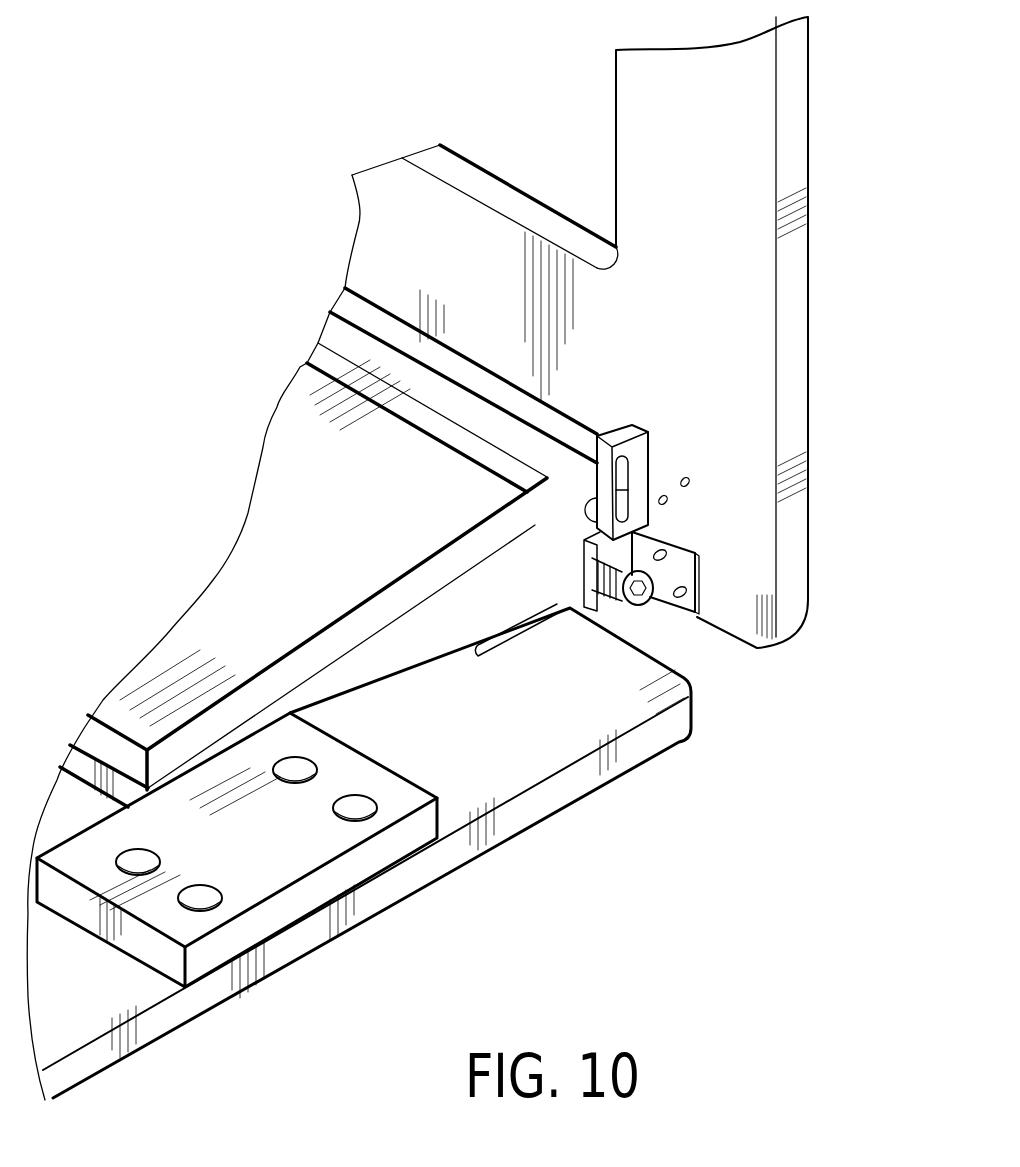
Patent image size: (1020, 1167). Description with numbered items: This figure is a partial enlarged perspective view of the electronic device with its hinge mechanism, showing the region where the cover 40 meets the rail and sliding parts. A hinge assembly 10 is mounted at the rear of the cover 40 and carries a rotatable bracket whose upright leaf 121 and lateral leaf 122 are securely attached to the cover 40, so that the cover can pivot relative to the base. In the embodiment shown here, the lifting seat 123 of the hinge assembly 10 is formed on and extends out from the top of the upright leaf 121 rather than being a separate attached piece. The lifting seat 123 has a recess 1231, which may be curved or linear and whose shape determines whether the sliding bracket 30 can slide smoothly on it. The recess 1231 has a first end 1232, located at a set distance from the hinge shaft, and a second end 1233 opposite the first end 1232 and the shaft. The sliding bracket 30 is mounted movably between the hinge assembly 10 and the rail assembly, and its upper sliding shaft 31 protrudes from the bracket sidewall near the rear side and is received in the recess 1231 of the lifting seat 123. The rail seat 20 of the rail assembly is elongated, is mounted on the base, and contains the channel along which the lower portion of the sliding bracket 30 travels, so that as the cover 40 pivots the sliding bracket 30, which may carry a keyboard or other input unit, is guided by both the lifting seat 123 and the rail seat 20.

The hinge assembly 10 is at (612, 616).
The rail seat 20 is at (282, 867).
The sliding bracket 30 is at (575, 450).
The upper sliding shaft 31 is at (593, 522).
The cover 40 is at (772, 345).
The upright leaf 121 is at (583, 566).
The lateral leaf 122 is at (698, 548).
The lifting seat 123 is at (747, 422).
The recess 1231 is at (690, 481).
The first end 1232 is at (622, 518).
The second end 1233 is at (623, 493).